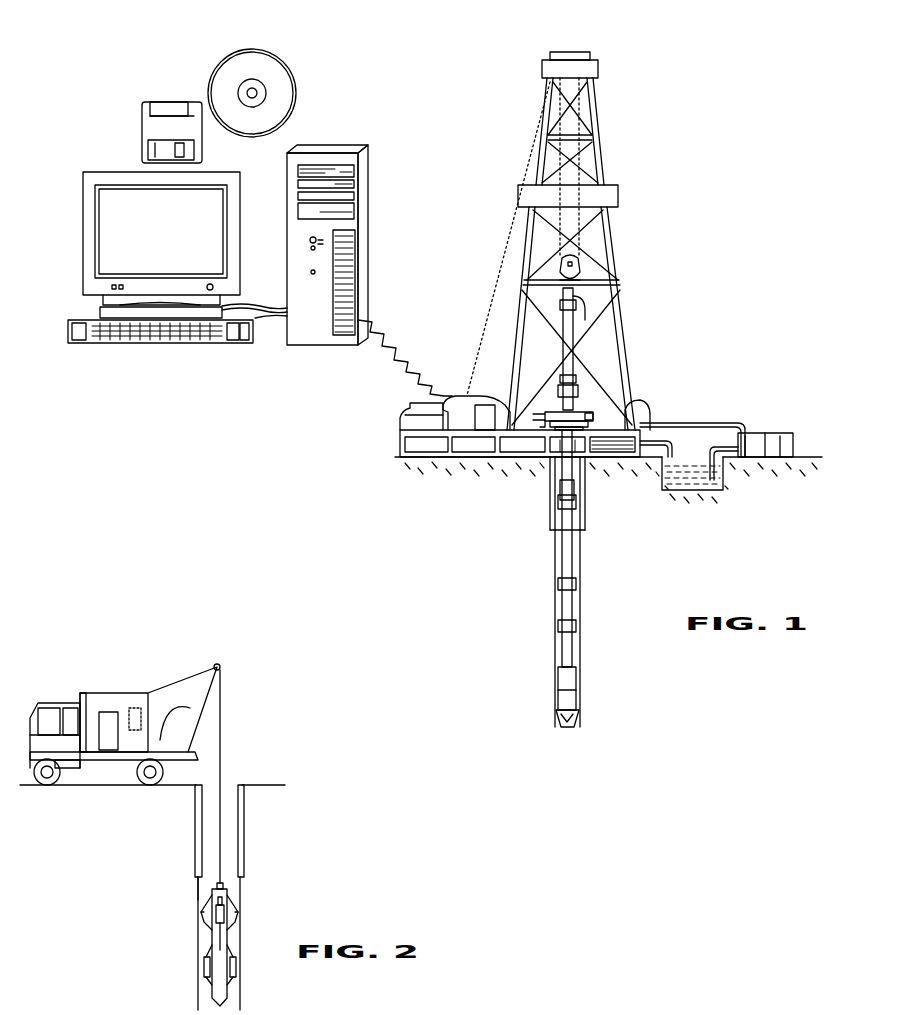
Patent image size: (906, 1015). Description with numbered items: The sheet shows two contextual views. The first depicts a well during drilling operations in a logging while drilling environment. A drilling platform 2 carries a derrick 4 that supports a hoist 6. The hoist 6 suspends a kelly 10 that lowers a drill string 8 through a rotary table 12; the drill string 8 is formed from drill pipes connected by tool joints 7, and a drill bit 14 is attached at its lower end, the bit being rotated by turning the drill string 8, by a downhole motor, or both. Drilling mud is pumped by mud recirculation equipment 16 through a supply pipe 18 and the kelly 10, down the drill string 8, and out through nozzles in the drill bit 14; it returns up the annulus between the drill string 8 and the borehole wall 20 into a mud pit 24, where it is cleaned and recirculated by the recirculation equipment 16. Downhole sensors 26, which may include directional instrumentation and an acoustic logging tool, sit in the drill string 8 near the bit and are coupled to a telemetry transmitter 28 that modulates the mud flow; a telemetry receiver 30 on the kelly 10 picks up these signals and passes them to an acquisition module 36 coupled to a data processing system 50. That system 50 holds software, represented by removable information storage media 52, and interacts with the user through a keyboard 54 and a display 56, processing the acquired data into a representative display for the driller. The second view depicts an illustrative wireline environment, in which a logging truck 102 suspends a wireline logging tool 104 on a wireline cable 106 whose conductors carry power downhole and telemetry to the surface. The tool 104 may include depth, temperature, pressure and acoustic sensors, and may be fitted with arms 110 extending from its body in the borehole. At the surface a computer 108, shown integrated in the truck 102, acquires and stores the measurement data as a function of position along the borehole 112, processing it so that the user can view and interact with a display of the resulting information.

In FIG. 1, the drilling platform 2 is at (400, 437).
In FIG. 1, the derrick 4 is at (604, 150).
In FIG. 1, the hoist 6 is at (582, 262).
In FIG. 1, the tool joints 7 is at (558, 537).
In FIG. 1, the drill string 8 is at (562, 545).
In FIG. 1, the kelly 10 is at (568, 323).
In FIG. 1, the rotary table 12 is at (583, 408).
In FIG. 1, the drill bit 14 is at (580, 718).
In FIG. 1, the mud recirculation equipment 16 is at (760, 437).
In FIG. 1, the supply pipe 18 is at (700, 423).
In FIG. 1, the borehole wall 20 is at (582, 540).
In FIG. 1, the mud pit 24 is at (724, 484).
In FIG. 1, the downhole sensors 26 is at (560, 697).
In FIG. 1, the telemetry transmitter 28 is at (576, 685).
In FIG. 1, the telemetry receiver 30 is at (577, 378).
In FIG. 1, the acquisition module 36 is at (493, 405).
In FIG. 1, the data processing system 50 is at (287, 286).
In FIG. 1, the removable information storage media 52 is at (219, 106).
In FIG. 1, the keyboard 54 is at (92, 342).
In FIG. 1, the display 56 is at (95, 298).
In FIG. 2, the logging truck 102 is at (85, 693).
In FIG. 2, the wireline logging tool 104 is at (212, 987).
In FIG. 2, the wireline cable 106 is at (222, 776).
In FIG. 2, the computer 108 is at (137, 708).
In FIG. 2, the centralizer arms / sensors 110 is at (194, 940).
In FIG. 2, the borehole 112 is at (198, 887).